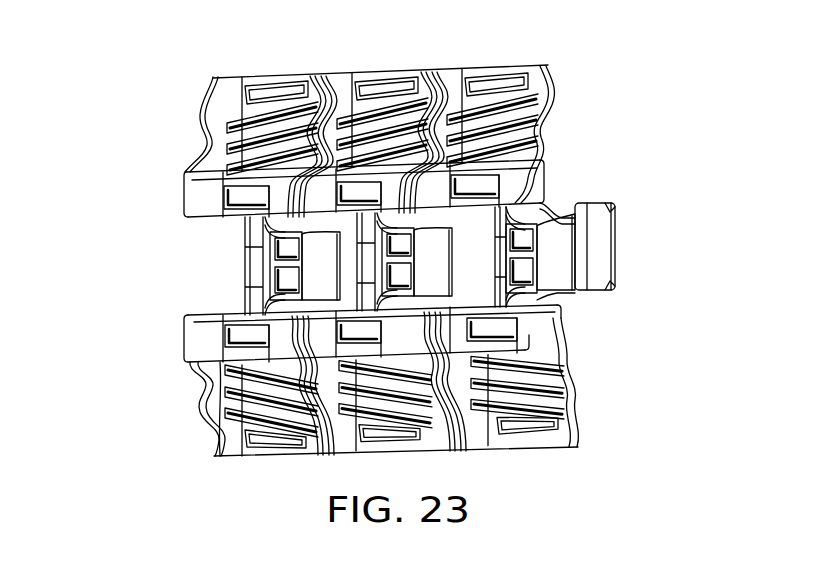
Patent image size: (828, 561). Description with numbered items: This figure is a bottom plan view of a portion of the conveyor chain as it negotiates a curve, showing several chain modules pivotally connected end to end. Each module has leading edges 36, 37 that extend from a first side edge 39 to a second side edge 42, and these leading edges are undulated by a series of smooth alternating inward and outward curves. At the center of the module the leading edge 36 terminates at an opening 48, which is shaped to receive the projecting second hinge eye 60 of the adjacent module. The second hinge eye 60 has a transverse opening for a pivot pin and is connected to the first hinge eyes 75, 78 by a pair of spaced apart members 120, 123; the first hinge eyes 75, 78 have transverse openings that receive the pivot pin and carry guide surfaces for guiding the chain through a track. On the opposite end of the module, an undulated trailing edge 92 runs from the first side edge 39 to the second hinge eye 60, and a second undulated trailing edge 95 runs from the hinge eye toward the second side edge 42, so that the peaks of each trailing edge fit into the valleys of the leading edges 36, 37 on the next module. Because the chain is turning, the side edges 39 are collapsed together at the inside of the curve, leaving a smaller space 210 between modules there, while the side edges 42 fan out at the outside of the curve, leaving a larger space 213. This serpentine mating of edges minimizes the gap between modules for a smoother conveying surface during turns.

The leading edge 36 is at (207, 128).
The leading edge 37 is at (200, 403).
The first side edge 39 is at (246, 74).
The second side edge 42 is at (277, 456).
The opening 48 is at (204, 272).
The second hinge eye 60 is at (598, 248).
The first hinge eye 75 is at (200, 339).
The first hinge eye 78 is at (205, 193).
The trailing edge 92 is at (566, 95).
The trailing edge 95 is at (560, 372).
The spaced apart member 120 is at (548, 212).
The spaced apart member 123 is at (558, 296).
The space 210 is at (423, 66).
The space 213 is at (462, 455).